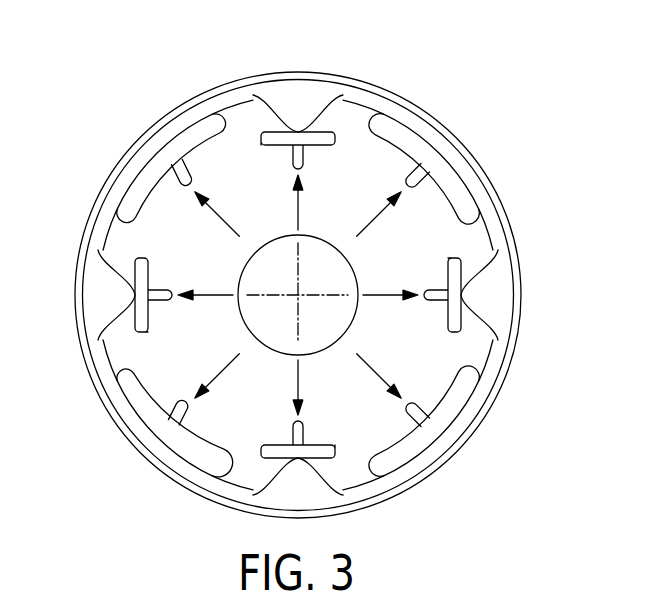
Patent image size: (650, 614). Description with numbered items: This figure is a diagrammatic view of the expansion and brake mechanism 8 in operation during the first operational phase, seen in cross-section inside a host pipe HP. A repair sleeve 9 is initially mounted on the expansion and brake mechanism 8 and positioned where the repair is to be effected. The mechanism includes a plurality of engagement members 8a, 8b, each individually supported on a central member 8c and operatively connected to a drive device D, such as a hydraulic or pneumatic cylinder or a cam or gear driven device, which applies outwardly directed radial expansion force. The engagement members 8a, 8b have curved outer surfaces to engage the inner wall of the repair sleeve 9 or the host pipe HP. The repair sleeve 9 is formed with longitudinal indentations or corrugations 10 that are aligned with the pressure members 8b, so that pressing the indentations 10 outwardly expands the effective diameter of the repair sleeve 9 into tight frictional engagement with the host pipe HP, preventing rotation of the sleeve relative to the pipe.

The expansion and brake mechanism 8 is at (334, 364).
The engagement member 8a is at (440, 165).
The engagement member 8b is at (455, 271).
The central member 8c is at (353, 272).
The repair sleeve 9 is at (353, 104).
The longitudinal indentation 10 is at (286, 116).
The drive device D is at (293, 204).
The host pipe HP is at (222, 120).